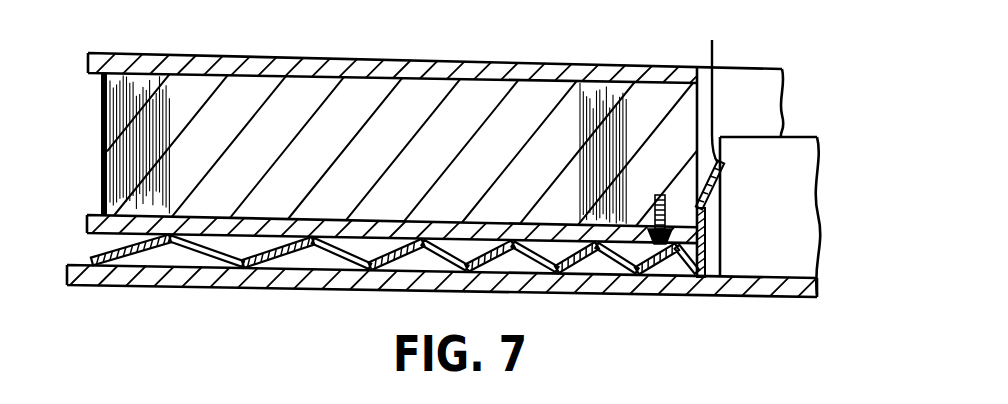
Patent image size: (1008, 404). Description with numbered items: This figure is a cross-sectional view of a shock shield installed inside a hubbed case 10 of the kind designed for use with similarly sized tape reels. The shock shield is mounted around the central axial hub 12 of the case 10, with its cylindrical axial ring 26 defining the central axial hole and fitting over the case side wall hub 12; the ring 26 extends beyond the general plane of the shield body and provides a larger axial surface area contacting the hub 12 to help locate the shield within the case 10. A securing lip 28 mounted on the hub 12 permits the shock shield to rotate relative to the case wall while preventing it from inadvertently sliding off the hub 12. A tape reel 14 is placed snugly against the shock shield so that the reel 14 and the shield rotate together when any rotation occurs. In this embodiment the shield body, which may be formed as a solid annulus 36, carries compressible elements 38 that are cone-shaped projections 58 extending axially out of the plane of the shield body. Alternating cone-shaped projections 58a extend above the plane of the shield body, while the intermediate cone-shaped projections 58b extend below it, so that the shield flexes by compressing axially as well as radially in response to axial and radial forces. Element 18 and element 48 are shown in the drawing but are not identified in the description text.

The hubbed case 10 is at (708, 297).
The central axial hub 12 is at (805, 157).
The tape reel 14 is at (520, 95).
The upper panel 18 is at (735, 85).
The cylindrical axial ring 26 is at (702, 240).
The securing lip 28 is at (710, 87).
The solid annulus 36 is at (101, 287).
The compressible elements 38 is at (328, 252).
The diagonal sealing strip 48 is at (722, 182).
The cone-shaped projections 58 is at (365, 293).
The cone-shaped projections extending above shield body 58a is at (130, 257).
The cone-shaped projections extending below shield body 58b is at (230, 252).